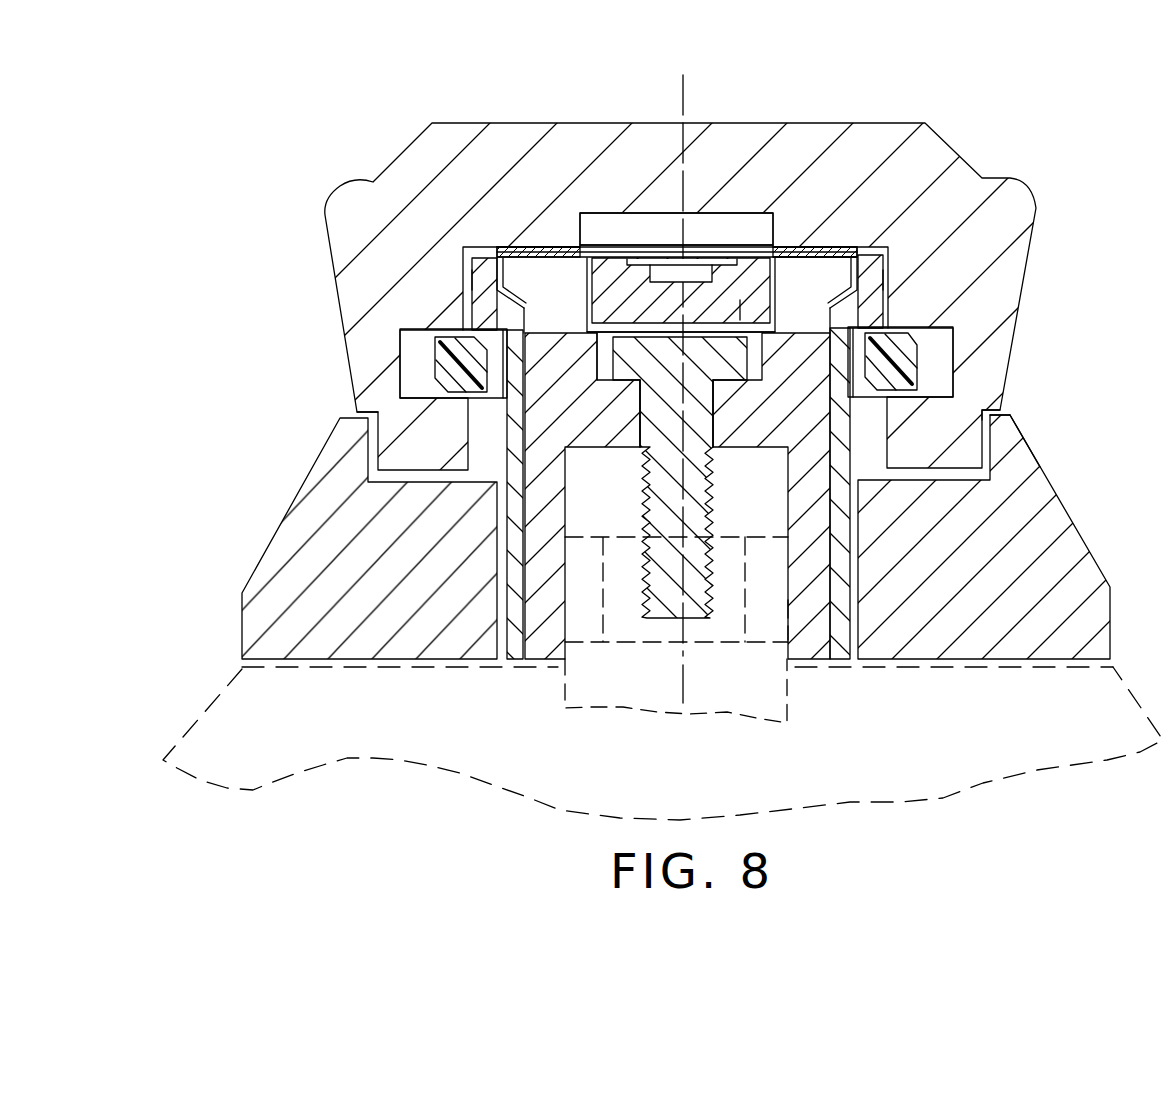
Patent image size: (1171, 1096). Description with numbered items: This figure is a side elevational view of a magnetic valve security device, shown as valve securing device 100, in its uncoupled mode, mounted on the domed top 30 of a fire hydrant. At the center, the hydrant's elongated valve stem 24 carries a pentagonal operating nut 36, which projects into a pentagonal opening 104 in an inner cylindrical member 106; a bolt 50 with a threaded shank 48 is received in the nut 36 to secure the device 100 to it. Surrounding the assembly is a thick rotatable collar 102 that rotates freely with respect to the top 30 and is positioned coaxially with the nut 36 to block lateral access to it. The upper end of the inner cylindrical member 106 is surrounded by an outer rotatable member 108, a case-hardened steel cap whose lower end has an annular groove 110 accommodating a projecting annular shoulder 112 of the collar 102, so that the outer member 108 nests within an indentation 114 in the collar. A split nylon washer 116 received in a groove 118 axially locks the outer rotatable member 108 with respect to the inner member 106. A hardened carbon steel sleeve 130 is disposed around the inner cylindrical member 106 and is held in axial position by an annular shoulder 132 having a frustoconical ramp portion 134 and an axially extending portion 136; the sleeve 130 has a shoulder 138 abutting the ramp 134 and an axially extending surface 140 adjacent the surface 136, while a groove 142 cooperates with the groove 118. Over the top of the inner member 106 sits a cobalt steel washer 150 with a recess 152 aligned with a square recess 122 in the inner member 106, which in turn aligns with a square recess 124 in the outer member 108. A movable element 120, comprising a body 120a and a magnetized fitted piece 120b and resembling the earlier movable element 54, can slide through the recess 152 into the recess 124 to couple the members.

The valve securing device 100 is at (823, 120).
The thick rotatable collar 102 is at (1047, 520).
The pentagonal opening 104 is at (775, 507).
The inner cylindrical member 106 is at (606, 430).
The outer rotatable member 108 is at (347, 220).
The annular groove 110 is at (995, 430).
The projecting annular shoulder 112 is at (1017, 460).
The indentation 114 is at (1002, 412).
The split nylon washer 116 is at (437, 375).
The groove 118 is at (410, 342).
The movable element 120 is at (590, 230).
The body 120a is at (748, 302).
The fitted piece 120b is at (672, 245).
The square recess 122 is at (790, 252).
The square recess 124 is at (735, 225).
The hardened carbon steel sleeve 130 is at (515, 659).
The annular shoulder 132 is at (518, 247).
The frustoconical ramp portion 134 is at (516, 306).
The axially extending portion 136 is at (480, 258).
The shoulder 138 is at (527, 300).
The axially extending surface 140 is at (497, 272).
The groove 142 is at (475, 392).
The cobalt steel washer 150 is at (538, 247).
The recess 152 is at (698, 245).
The valve stem 24 is at (770, 698).
The domed top 30 is at (337, 742).
The operating nut 36 is at (770, 636).
The threaded shank 48 is at (660, 512).
The bolt 50 is at (692, 388).
The movable element 54 is at (603, 335).